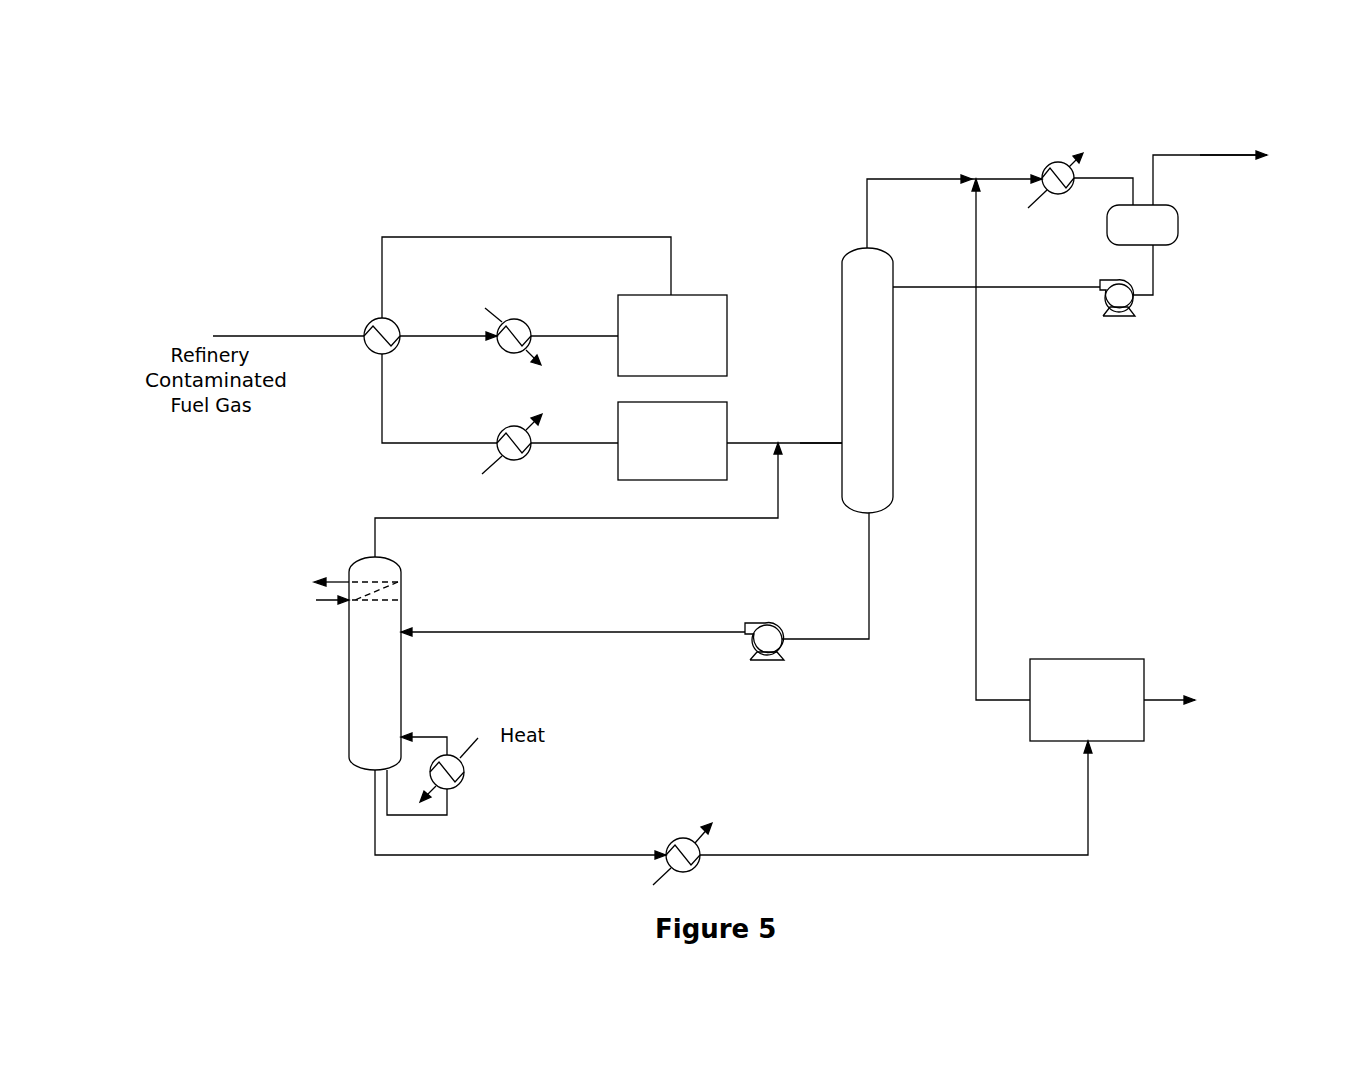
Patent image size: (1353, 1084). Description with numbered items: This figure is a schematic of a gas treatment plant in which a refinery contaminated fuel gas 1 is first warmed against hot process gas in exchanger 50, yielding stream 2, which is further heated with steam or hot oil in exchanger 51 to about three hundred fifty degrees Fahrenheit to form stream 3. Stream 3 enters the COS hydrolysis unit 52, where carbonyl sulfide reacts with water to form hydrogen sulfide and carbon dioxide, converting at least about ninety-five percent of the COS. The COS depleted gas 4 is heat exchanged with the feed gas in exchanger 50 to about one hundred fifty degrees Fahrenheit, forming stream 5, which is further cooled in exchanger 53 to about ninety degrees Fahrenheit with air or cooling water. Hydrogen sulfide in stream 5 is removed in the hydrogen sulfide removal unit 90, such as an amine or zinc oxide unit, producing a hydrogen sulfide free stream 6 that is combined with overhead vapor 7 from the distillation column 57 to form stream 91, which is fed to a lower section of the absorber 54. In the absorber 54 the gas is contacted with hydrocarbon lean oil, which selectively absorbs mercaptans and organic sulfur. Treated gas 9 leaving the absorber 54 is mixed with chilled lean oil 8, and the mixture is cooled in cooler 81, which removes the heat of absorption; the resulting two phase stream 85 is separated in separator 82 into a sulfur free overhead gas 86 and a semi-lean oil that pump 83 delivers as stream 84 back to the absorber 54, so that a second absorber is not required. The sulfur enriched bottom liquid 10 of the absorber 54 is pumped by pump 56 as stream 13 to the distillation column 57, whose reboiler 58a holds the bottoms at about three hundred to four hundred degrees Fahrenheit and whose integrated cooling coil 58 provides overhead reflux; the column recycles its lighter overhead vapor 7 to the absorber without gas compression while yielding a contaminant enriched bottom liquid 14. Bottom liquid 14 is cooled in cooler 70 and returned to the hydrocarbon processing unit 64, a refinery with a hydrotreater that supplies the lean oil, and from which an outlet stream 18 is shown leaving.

The refinery contaminated fuel gas stream 1 is at (262, 336).
The stream 2 is at (442, 336).
The stream 3 is at (558, 336).
The COS depleted gas stream 4 is at (603, 237).
The stream 5 is at (408, 443).
The H2S free stream 6 is at (743, 443).
The overhead vapor stream 7 is at (780, 520).
The lean oil stream 8 is at (976, 352).
The treated gas stream 9 is at (918, 179).
The bottom liquid stream 10 is at (869, 585).
The stream 13 is at (668, 632).
The bottom liquid stream 14 is at (545, 855).
The refinery outlet stream 18 is at (1165, 705).
The heat exchanger 50 is at (394, 324).
The exchanger 51 is at (524, 323).
The COS hydrolysis unit 52 is at (727, 337).
The exchanger 53 is at (508, 426).
The absorber 54 is at (842, 262).
The pump 56 is at (767, 623).
The distillation column 57 is at (401, 572).
The cooling coil 58 is at (360, 580).
The reboiler 58a is at (464, 775).
The hydrocarbon processing unit 64 is at (1144, 659).
The cooler 70 is at (712, 822).
The cooler 81 is at (1048, 162).
The separator 82 is at (1178, 220).
The pump 83 is at (1133, 316).
The stream 84 is at (953, 287).
The two phase stream 85 is at (1115, 175).
The sulfur free overhead gas 86 is at (1240, 152).
The H2S removal unit 90 is at (618, 468).
The stream 91 is at (802, 443).